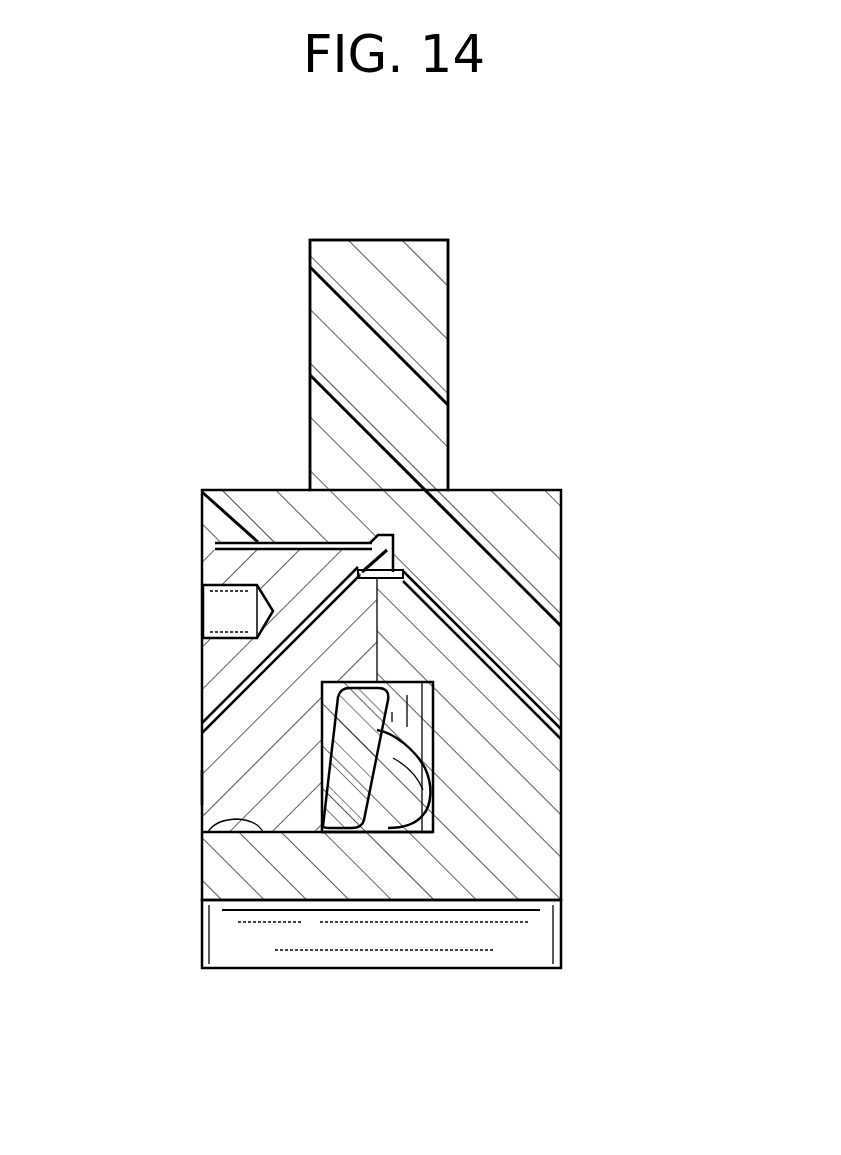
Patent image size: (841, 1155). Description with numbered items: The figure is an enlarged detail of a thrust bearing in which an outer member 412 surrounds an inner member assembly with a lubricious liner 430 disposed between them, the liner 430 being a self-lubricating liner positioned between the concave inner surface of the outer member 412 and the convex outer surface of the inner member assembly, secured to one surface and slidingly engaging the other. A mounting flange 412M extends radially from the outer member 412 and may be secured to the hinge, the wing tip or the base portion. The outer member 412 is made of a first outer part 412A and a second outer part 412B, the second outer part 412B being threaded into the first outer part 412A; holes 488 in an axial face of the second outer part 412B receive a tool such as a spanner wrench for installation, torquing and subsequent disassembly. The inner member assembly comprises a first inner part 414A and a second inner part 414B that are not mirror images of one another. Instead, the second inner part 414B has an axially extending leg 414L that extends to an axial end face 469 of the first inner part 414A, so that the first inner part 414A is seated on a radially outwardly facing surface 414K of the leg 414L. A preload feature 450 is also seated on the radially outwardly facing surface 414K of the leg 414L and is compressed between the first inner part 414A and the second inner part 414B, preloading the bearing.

The outer member 412 is at (620, 222).
The mounting flange 412M is at (410, 343).
The first outer part 412A is at (527, 543).
The second outer part 412B is at (218, 666).
The holes 488 is at (224, 613).
The lubricious liner 430 is at (253, 674).
The first inner part 414A is at (228, 771).
The second inner part 414B is at (532, 803).
The axial end face 469 is at (205, 788).
The preload feature 450 is at (347, 786).
The radially outwardly facing surface 414K is at (228, 829).
The axially extending leg 414L is at (338, 897).